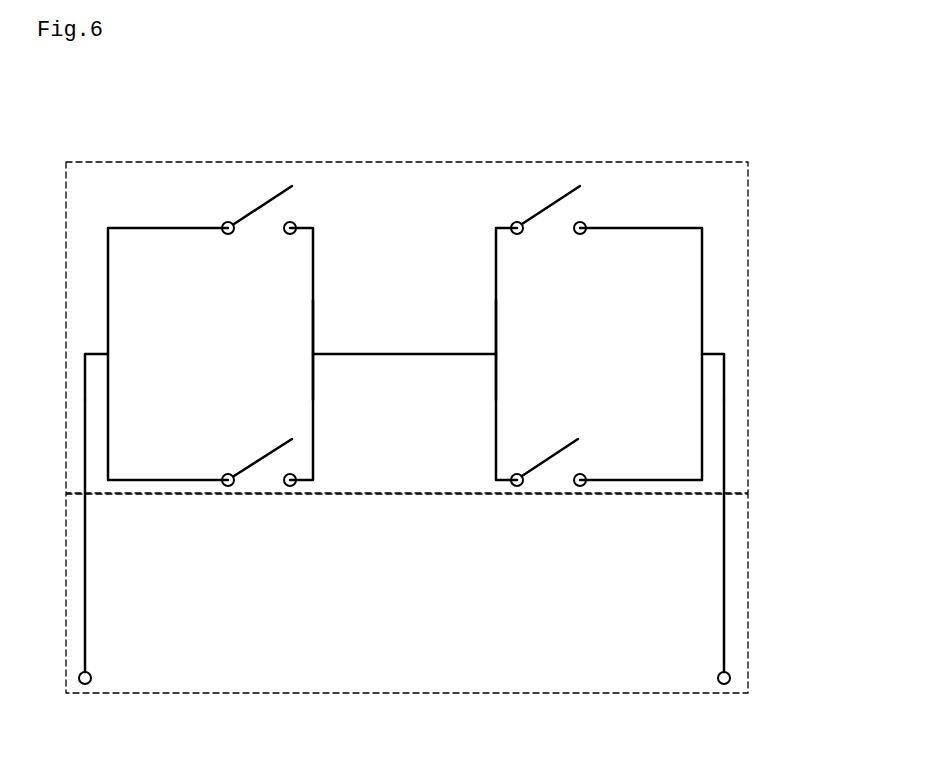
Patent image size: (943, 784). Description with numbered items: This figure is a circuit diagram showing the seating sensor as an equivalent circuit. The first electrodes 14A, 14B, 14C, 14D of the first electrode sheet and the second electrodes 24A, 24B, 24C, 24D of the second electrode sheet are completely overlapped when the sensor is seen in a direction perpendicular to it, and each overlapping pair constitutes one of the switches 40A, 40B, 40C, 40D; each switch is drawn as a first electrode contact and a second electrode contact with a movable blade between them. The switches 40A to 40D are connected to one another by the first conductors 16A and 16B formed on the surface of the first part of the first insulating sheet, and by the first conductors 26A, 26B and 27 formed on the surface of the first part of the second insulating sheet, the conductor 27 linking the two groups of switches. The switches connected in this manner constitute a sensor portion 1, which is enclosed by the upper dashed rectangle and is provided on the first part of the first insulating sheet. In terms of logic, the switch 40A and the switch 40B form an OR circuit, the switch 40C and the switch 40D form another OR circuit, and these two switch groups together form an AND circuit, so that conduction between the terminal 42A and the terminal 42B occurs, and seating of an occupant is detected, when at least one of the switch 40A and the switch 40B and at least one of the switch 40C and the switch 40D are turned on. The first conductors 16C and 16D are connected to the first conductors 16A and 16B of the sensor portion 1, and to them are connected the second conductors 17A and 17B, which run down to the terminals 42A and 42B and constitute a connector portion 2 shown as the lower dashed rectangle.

The sensor portion 1 is at (750, 240).
The connector portion 2 is at (750, 512).
The first electrode 14A is at (226, 474).
The first electrode 14B is at (226, 222).
The first electrode 14C is at (584, 474).
The first electrode 14D is at (584, 221).
The first conductor 16A is at (108, 312).
The first conductor 16B is at (703, 330).
The first conductor 16C is at (92, 353).
The first conductor 16D is at (712, 353).
The second conductor 17A is at (87, 592).
The second conductor 17B is at (726, 565).
The second electrode 24A is at (293, 487).
The second electrode 24B is at (293, 221).
The second electrode 24C is at (515, 487).
The second electrode 24D is at (514, 221).
The first conductor 26A is at (312, 337).
The first conductor 26B is at (497, 335).
The first conductor 27 is at (348, 352).
The switch 40A is at (264, 431).
The switch 40B is at (275, 178).
The switch 40C is at (566, 430).
The switch 40D is at (565, 178).
The terminal 42A is at (90, 671).
The terminal 42B is at (728, 670).